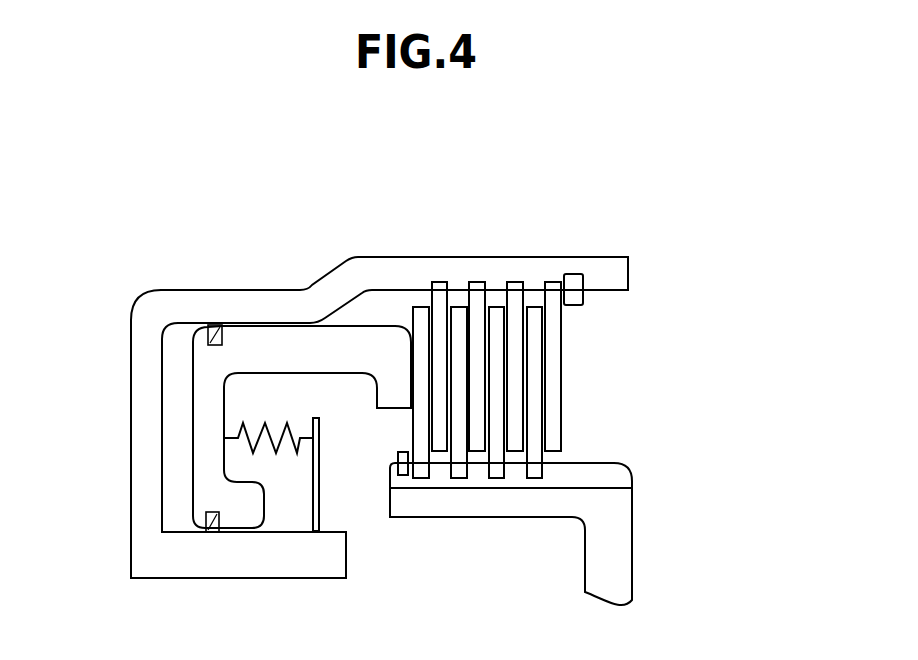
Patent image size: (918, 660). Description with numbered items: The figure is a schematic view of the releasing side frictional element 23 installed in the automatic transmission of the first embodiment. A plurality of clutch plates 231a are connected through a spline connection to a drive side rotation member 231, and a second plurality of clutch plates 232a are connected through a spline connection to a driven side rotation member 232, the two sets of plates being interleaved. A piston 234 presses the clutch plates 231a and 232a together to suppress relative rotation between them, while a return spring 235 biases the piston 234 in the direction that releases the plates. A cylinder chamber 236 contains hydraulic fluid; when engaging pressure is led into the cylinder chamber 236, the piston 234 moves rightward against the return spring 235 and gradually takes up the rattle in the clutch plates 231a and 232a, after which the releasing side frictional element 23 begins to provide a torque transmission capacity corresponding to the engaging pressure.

The releasing side frictional element 23 is at (645, 252).
The drive side rotation member 231 is at (376, 270).
The clutch plates 231a is at (439, 289).
The driven side rotation member 232 is at (618, 547).
The clutch plates 232a is at (533, 435).
The piston 234 is at (325, 360).
The return spring 235 is at (278, 440).
The cylinder chamber 236 is at (177, 473).